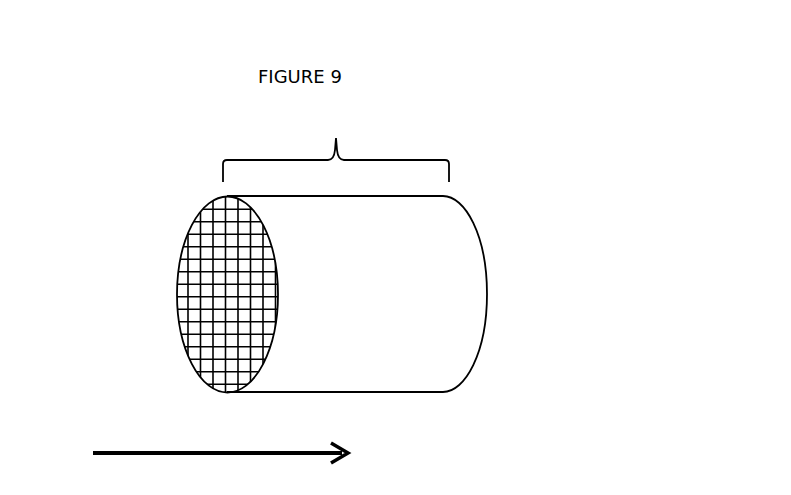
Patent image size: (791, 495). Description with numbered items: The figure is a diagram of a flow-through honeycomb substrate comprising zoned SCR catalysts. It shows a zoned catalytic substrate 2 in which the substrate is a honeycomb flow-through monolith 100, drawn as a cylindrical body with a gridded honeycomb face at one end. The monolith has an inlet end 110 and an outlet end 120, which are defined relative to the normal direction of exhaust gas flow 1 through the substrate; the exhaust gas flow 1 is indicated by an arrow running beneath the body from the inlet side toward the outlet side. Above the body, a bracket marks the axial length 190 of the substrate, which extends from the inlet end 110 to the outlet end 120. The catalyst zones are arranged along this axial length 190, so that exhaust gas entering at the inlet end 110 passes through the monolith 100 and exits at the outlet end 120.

The exhaust gas flow 1 is at (135, 452).
The zoned catalytic substrate 2 is at (495, 212).
The honeycomb flow-through monolith 100 is at (382, 352).
The inlet end 110 is at (203, 279).
The outlet end 120 is at (487, 303).
The axial length 190 is at (336, 149).